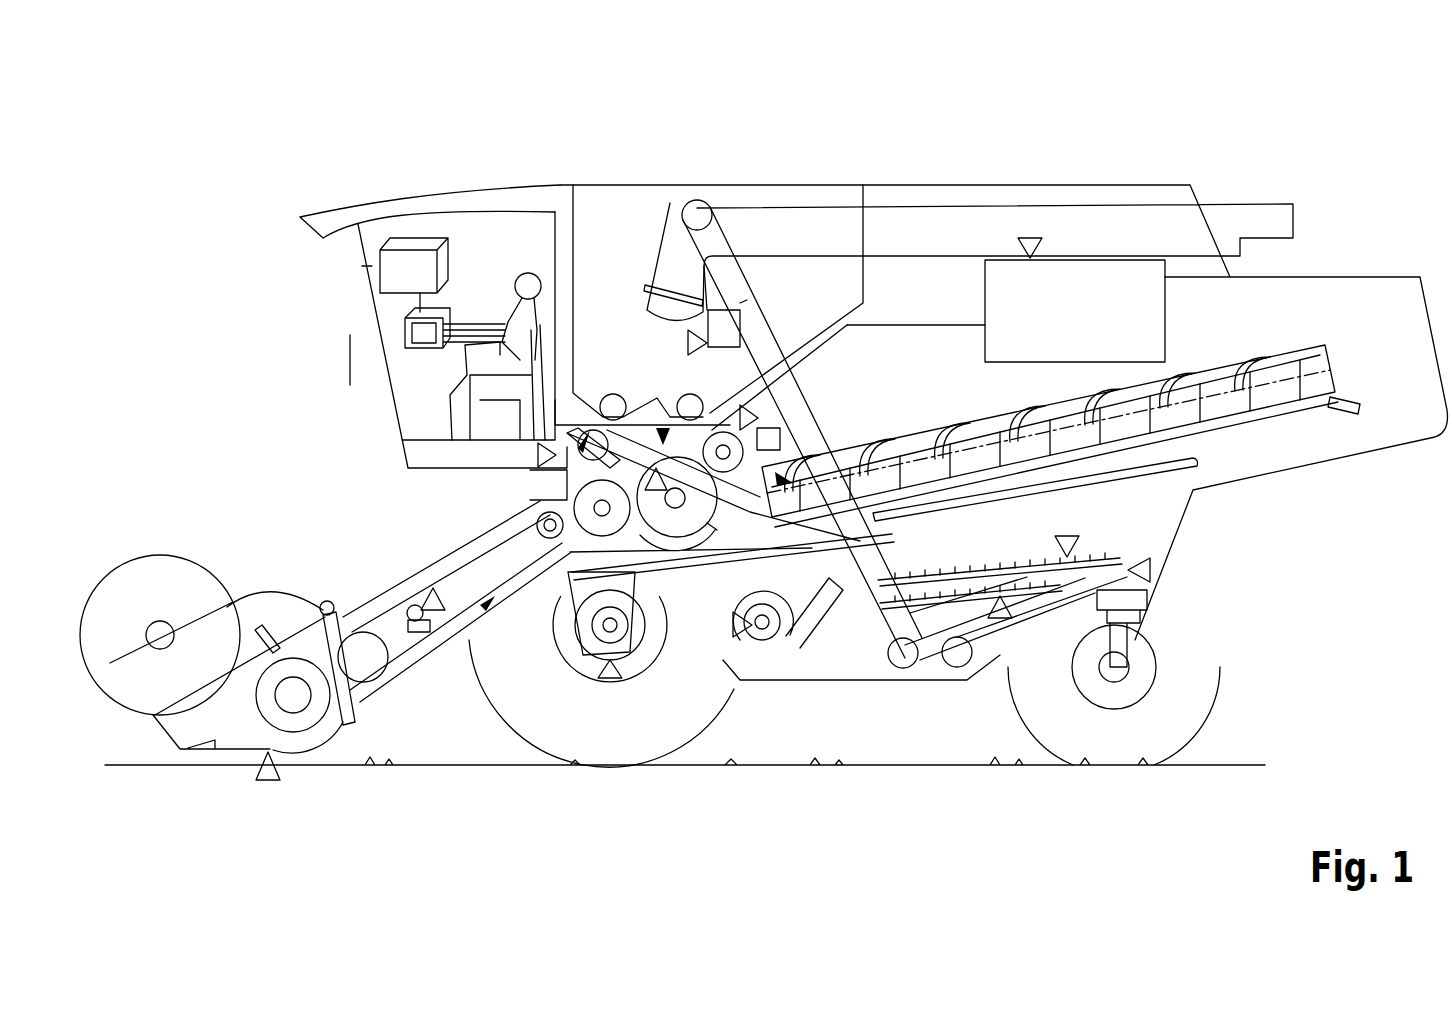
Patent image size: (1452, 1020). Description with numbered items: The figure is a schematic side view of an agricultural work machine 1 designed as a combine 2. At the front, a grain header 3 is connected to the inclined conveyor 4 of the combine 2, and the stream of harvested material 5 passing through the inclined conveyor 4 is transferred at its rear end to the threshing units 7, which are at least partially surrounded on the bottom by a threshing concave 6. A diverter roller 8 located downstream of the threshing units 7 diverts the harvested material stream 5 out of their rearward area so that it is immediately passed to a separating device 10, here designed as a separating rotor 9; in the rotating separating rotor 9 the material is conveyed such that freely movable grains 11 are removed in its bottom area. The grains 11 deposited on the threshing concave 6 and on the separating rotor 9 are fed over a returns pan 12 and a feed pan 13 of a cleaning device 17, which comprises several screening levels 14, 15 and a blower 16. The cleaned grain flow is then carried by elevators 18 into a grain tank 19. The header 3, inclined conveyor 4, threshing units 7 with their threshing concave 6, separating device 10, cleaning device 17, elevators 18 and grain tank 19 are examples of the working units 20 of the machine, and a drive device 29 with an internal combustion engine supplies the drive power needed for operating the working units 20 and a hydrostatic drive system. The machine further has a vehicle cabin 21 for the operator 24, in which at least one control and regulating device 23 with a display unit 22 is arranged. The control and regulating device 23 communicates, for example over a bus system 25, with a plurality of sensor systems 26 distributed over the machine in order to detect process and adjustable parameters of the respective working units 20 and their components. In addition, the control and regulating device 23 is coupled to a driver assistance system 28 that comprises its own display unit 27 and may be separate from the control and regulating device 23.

The agricultural work machine 1 is at (770, 391).
The combine 2 is at (240, 212).
The grain header 3 is at (238, 555).
The inclined conveyor 4 is at (372, 610).
The harvested material stream 5 is at (736, 445).
The threshing concave 6 is at (667, 505).
The threshing unit 7 is at (660, 430).
The diverter roller 8 is at (740, 303).
The separating rotor 9 is at (1098, 370).
The separating device 10 is at (1258, 395).
The grains 11 is at (1092, 462).
The returns pan 12 is at (1197, 490).
The feed pan 13 is at (885, 533).
The screening level 14 is at (1040, 590).
The screening level 15 is at (1130, 582).
The blower 16 is at (773, 630).
The cleaning device 17 is at (985, 605).
The elevator 18 is at (887, 565).
The grain tank 19 is at (583, 220).
The working unit 20 is at (757, 486).
The vehicle cabin 21 is at (466, 262).
The display unit 22 is at (397, 382).
The control and regulating device 23 is at (458, 250).
The operator 24 is at (528, 272).
The bus system 25 is at (350, 335).
The sensor system 26 is at (1030, 238).
The display unit 27 is at (411, 250).
The driver assistance system 28 is at (362, 272).
The drive device 29 is at (1113, 260).